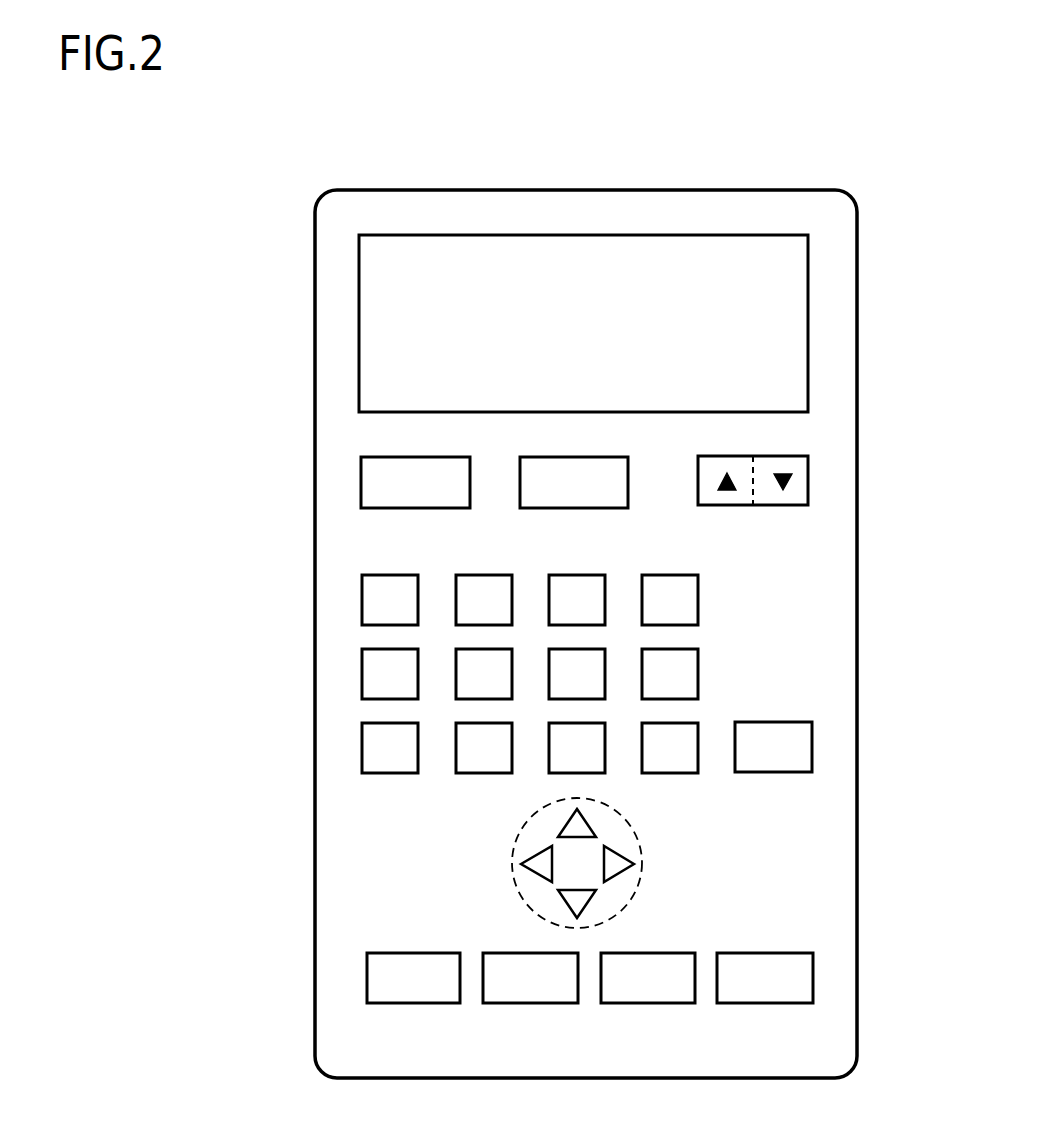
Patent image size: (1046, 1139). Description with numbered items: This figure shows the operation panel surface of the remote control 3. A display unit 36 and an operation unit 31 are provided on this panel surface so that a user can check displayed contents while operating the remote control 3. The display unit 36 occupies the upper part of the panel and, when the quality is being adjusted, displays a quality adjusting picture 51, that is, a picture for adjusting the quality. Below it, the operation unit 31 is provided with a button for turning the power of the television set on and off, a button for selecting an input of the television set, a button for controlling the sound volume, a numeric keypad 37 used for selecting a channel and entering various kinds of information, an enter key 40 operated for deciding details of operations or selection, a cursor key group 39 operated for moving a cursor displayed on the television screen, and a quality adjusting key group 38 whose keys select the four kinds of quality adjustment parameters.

The remote control 3 is at (815, 139).
The quality adjusting picture 51 is at (437, 260).
The display unit 36 is at (808, 330).
The operation unit 31 is at (222, 460).
The numeric keypad 37 is at (349, 575).
The enter key 40 is at (812, 745).
The cursor key group 39 is at (643, 861).
The quality adjusting key group 38 is at (351, 950).